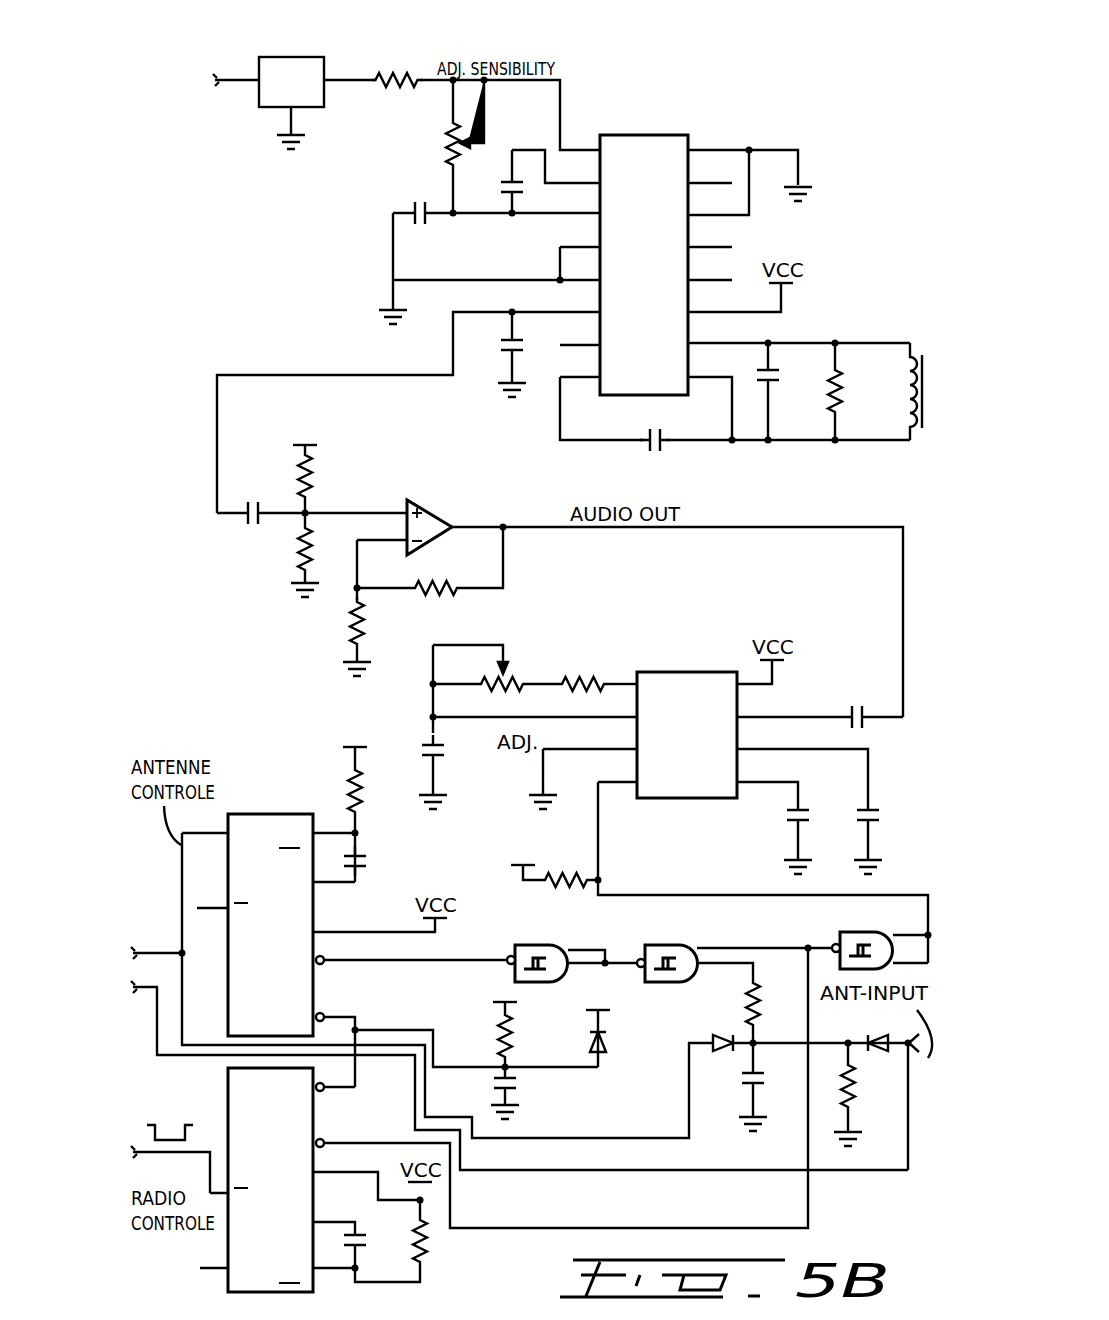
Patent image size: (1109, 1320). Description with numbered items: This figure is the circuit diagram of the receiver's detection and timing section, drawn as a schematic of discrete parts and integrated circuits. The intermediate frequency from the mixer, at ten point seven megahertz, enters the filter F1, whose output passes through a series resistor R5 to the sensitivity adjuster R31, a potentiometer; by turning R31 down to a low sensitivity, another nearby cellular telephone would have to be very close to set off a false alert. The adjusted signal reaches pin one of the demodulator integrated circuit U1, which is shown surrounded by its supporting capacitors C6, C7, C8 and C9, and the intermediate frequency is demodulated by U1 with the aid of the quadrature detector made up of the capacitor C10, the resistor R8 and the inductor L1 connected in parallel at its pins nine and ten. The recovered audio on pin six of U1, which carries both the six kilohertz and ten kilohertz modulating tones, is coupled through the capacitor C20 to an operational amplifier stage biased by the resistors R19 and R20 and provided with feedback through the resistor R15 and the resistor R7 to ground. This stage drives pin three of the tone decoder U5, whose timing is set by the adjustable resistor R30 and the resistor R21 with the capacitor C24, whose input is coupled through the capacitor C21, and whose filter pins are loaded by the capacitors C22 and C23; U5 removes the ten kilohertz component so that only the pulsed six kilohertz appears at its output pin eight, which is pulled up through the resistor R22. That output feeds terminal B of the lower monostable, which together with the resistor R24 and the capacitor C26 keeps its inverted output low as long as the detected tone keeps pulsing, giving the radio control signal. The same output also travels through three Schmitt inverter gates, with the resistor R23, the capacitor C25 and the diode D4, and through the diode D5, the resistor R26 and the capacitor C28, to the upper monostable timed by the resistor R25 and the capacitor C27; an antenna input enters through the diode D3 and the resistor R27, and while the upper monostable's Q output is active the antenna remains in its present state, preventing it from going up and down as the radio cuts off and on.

The filter F1 is at (276, 76).
The resistor R5 is at (398, 67).
The sensitivity adjuster R31 is at (447, 146).
The capacitor C6 is at (534, 181).
The capacitor C7 is at (496, 199).
The capacitor C8 is at (497, 354).
The capacitor C9 is at (655, 424).
The integrated circuit U1 is at (658, 250).
The capacitor C10 is at (788, 391).
The resistor R8 is at (850, 391).
The inductor L1 is at (900, 391).
The capacitor C20 is at (261, 499).
The resistor R19 is at (319, 466).
The resistor R20 is at (322, 555).
The feedback resistor R15 is at (437, 575).
The resistor R7 is at (368, 636).
The adjustment potentiometer R30 is at (496, 698).
The resistor R21 is at (598, 672).
The integrated circuit U5 is at (688, 721).
The capacitor C24 is at (453, 772).
The resistor R22 is at (550, 864).
The capacitor C21 is at (857, 704).
The capacitor C22 is at (816, 831).
The capacitor C23 is at (886, 831).
The resistor R25 is at (369, 778).
The capacitor C27 is at (374, 857).
The resistor R23 is at (519, 1022).
The capacitor C25 is at (519, 1093).
The diode D4 is at (608, 1026).
The diode D5 is at (718, 1028).
The resistor R26 is at (773, 1010).
The capacitor C28 is at (768, 1087).
The diode D3 is at (875, 1028).
The resistor R27 is at (865, 1094).
The resistor R24 is at (441, 1240).
The capacitor C26 is at (374, 1248).